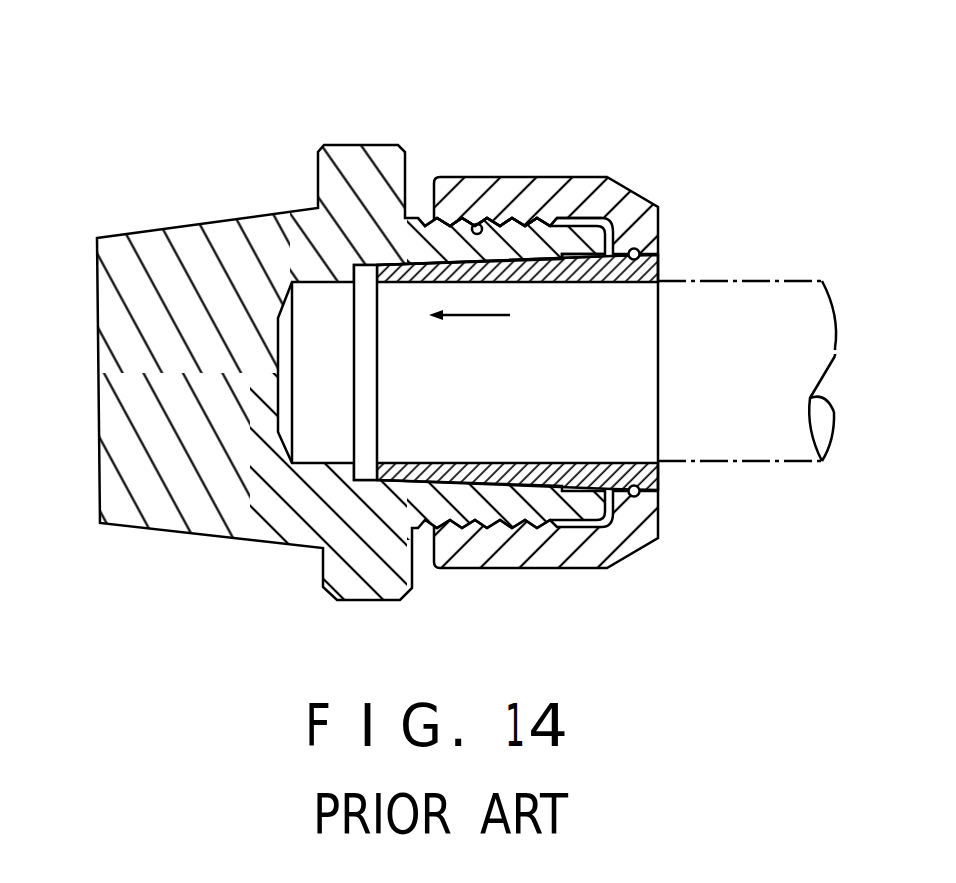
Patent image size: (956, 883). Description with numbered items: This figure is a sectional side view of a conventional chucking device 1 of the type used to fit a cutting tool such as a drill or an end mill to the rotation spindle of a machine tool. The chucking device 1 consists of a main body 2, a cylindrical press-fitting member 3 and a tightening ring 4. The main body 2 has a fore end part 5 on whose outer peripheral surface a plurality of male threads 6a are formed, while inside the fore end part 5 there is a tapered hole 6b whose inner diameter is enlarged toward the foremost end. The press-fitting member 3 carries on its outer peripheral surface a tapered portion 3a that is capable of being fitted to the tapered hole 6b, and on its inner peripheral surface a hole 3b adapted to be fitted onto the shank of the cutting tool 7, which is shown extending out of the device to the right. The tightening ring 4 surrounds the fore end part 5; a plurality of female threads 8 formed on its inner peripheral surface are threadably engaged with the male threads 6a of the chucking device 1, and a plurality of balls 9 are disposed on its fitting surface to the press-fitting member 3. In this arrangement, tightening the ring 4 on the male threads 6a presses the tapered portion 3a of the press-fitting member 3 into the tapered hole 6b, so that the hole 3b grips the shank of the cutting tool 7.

The chucking device 1 is at (463, 314).
The main body 2 is at (227, 232).
The cylindrical press-fitting member 3 is at (557, 366).
The tapered portion 3a is at (558, 259).
The hole 3b is at (633, 287).
The tightening ring 4 is at (560, 187).
The fore end part 5 is at (484, 185).
The male threads 6a is at (497, 220).
The tapered hole 6b is at (529, 263).
The cutting tool 7 is at (727, 447).
The female threads 8 is at (474, 224).
The balls 9 is at (640, 251).